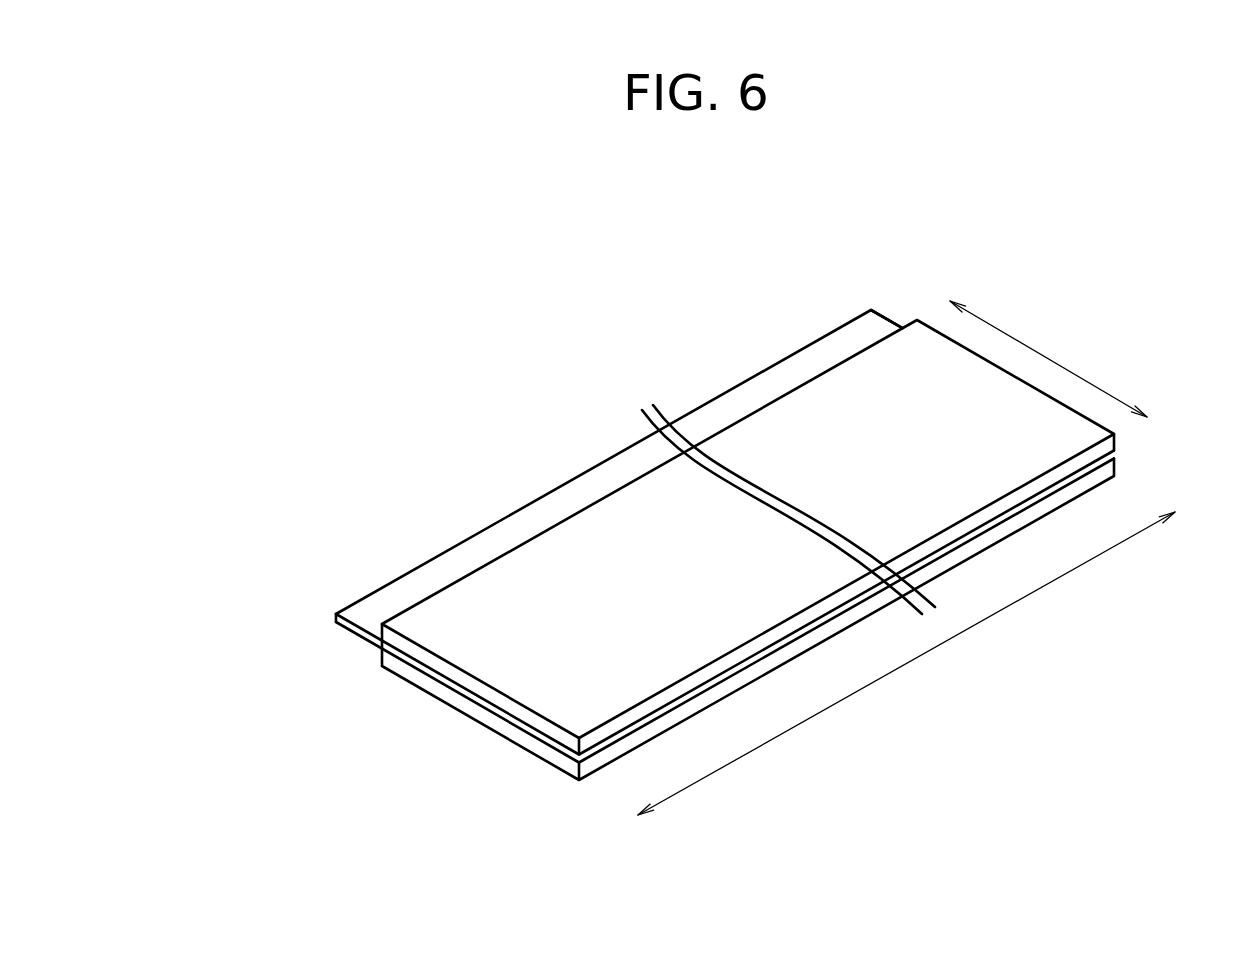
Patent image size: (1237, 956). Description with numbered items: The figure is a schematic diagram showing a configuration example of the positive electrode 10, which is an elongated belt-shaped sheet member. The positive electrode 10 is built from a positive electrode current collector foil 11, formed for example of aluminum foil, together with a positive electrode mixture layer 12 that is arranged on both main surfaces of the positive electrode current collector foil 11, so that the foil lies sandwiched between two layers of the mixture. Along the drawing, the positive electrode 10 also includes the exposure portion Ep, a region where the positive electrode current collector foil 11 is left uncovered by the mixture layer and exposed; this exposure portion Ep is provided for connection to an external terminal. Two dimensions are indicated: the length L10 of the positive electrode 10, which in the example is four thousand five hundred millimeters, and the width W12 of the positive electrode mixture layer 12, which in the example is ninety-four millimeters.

The positive electrode 10 is at (413, 786).
The positive electrode current collector foil 11 is at (367, 617).
The positive electrode mixture layer 12 is at (452, 670).
The exposure portion Ep is at (767, 392).
The width of positive electrode mixture layer W12 is at (1048, 359).
The length of positive electrode L10 is at (906, 663).